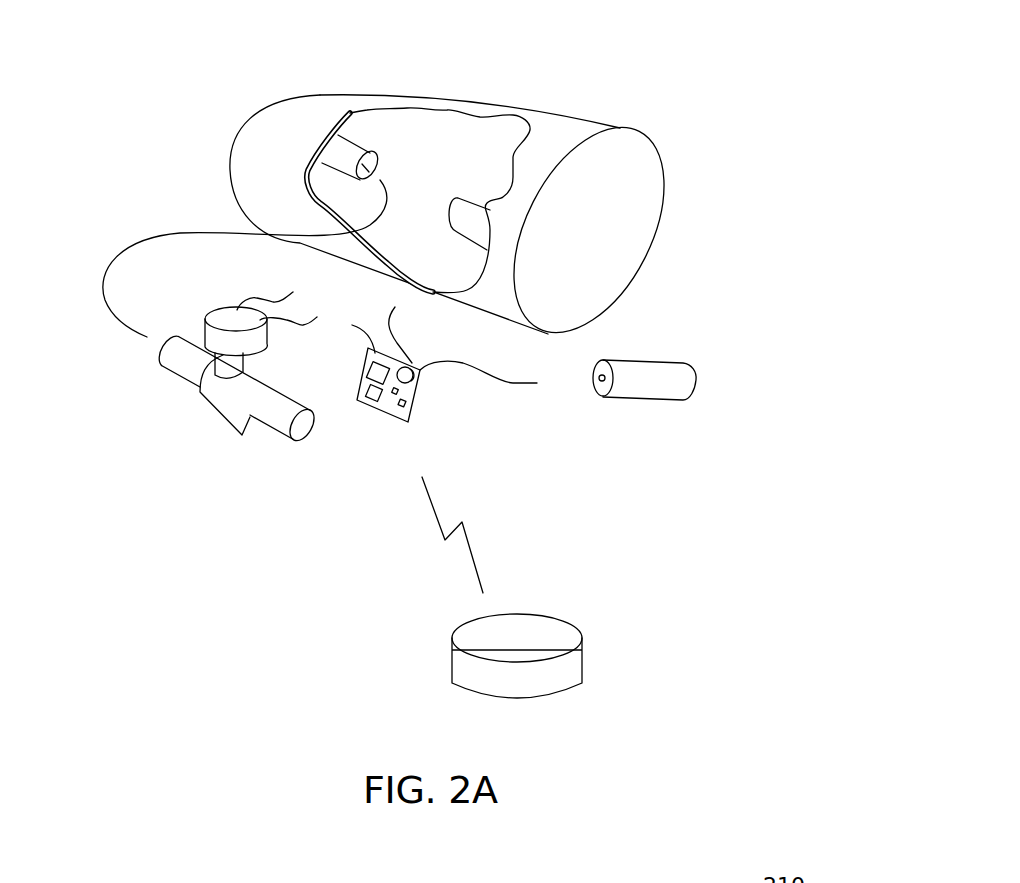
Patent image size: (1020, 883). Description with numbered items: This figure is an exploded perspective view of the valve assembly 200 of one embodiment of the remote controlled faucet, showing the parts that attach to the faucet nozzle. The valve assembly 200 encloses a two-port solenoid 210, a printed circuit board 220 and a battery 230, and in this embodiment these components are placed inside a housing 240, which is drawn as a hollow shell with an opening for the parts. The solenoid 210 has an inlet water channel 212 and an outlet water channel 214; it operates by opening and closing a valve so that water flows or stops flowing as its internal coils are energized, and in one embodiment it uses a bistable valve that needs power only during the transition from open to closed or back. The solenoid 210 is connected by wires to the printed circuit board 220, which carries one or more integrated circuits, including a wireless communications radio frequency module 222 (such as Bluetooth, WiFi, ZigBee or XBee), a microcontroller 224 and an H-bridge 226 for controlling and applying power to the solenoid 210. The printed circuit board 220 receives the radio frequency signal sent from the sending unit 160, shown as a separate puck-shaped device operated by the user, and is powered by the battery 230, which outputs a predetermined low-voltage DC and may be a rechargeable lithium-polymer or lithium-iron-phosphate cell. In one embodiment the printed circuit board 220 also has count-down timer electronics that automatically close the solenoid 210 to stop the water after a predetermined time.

The valve assembly 200 is at (892, 212).
The housing 240 is at (577, 112).
The battery 230 is at (672, 355).
The printed circuit board 220 is at (412, 394).
The radio frequency module 222 is at (367, 363).
The microcontroller 224 is at (372, 395).
The H-bridge 226 is at (403, 404).
The two-port solenoid 210 is at (185, 427).
The inlet water channel 212 is at (177, 375).
The outlet water channel 214 is at (265, 430).
The sending unit 160 is at (560, 622).